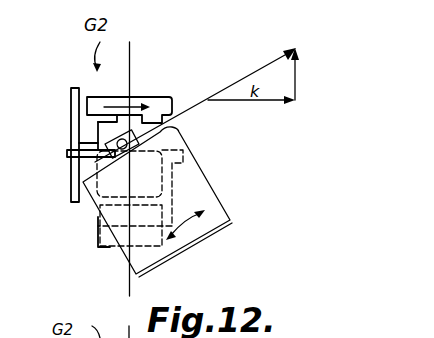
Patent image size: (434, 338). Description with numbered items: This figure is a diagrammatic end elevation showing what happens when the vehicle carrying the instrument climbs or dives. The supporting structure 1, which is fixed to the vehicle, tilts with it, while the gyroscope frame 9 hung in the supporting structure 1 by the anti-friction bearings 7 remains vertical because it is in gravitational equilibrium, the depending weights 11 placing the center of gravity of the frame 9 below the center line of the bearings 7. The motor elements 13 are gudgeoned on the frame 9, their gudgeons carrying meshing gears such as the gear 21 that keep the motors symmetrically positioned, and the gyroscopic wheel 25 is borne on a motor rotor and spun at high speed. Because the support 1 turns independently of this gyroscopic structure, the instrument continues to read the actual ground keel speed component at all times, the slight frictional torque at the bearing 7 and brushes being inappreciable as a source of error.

The supporting structure 1 is at (193, 183).
The anti-friction bearings 7 is at (68, 153).
The gyroscope frame 9 is at (68, 163).
The depending weights 11 is at (107, 240).
The motor elements 13 is at (98, 134).
The gear 21 is at (72, 90).
The gyroscopic wheel 25 is at (173, 88).